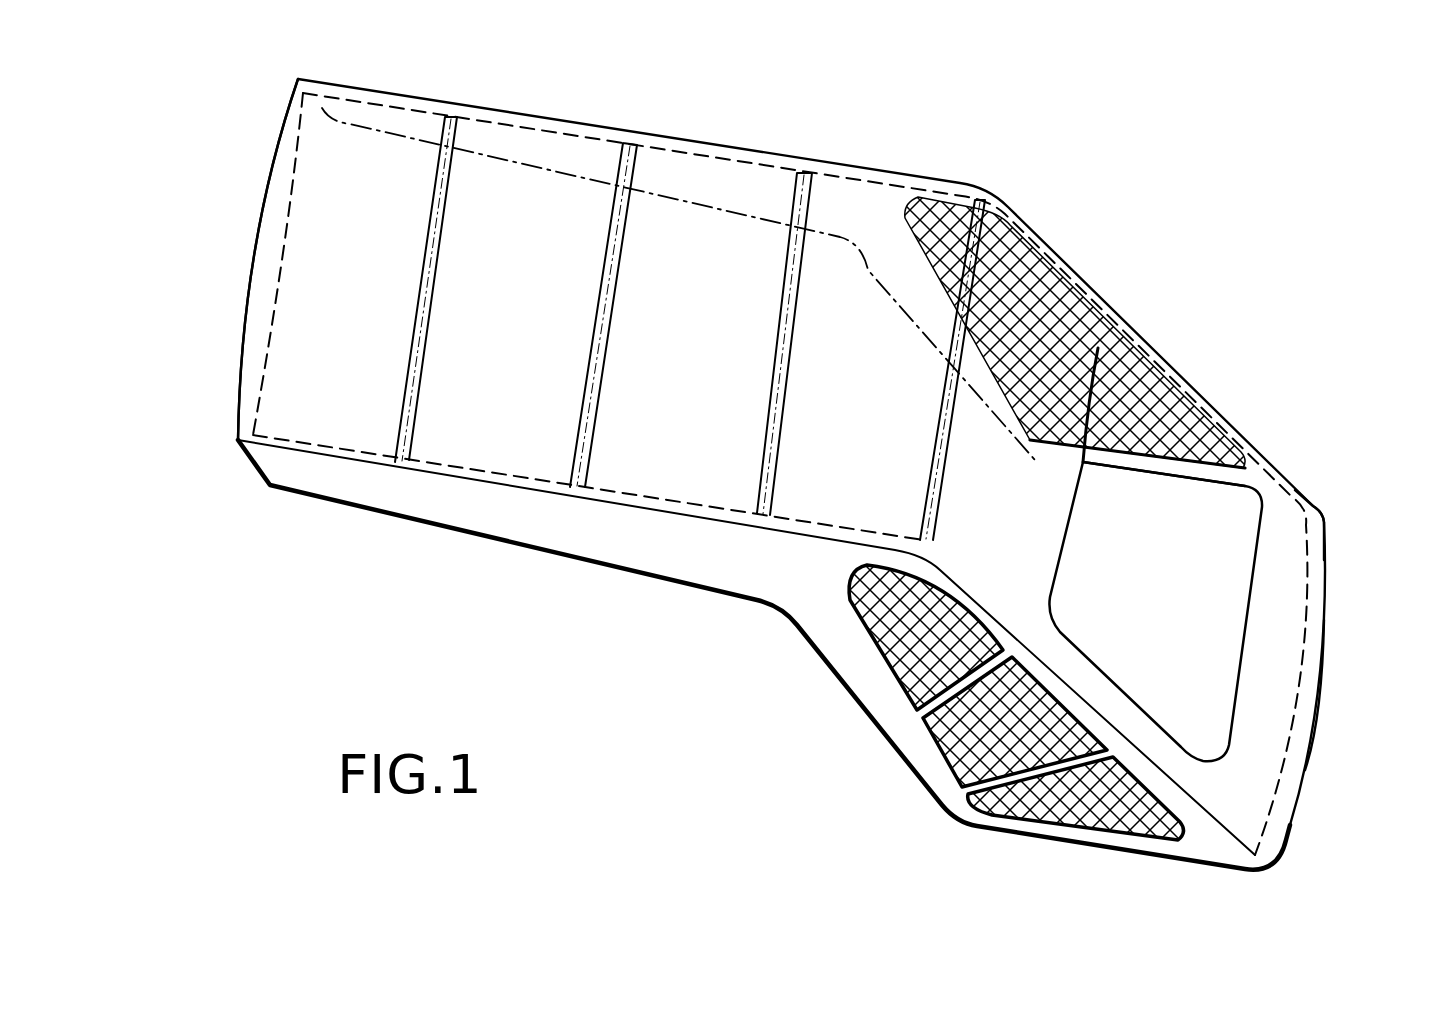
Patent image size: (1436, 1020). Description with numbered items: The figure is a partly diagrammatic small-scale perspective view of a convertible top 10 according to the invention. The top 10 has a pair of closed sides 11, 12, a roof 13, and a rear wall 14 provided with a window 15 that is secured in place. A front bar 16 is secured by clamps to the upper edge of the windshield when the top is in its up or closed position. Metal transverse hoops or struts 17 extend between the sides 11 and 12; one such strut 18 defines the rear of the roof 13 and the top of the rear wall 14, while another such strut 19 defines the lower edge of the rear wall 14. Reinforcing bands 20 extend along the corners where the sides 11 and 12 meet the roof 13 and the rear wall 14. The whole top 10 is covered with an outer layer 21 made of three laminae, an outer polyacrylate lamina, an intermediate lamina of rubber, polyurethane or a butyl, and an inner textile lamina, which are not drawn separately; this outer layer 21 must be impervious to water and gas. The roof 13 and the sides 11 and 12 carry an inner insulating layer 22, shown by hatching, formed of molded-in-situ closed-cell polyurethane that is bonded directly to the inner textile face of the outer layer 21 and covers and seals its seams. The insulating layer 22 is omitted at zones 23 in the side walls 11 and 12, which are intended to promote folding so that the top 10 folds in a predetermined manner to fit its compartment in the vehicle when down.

The convertible top 10 is at (1030, 161).
The closed side 11 is at (847, 716).
The closed side 12 is at (1189, 494).
The roof 13 is at (727, 240).
The rear wall 14 is at (1287, 563).
The window 15 is at (1145, 549).
The front bar 16 is at (283, 165).
The transverse hoops or struts 17 is at (622, 147).
The strut 18 is at (937, 497).
The strut 19 is at (1293, 640).
The reinforcing bands 20 is at (387, 112).
The outer layer 21 is at (336, 259).
The inner insulating layer 22 is at (1056, 442).
The zones 23 is at (1050, 303).